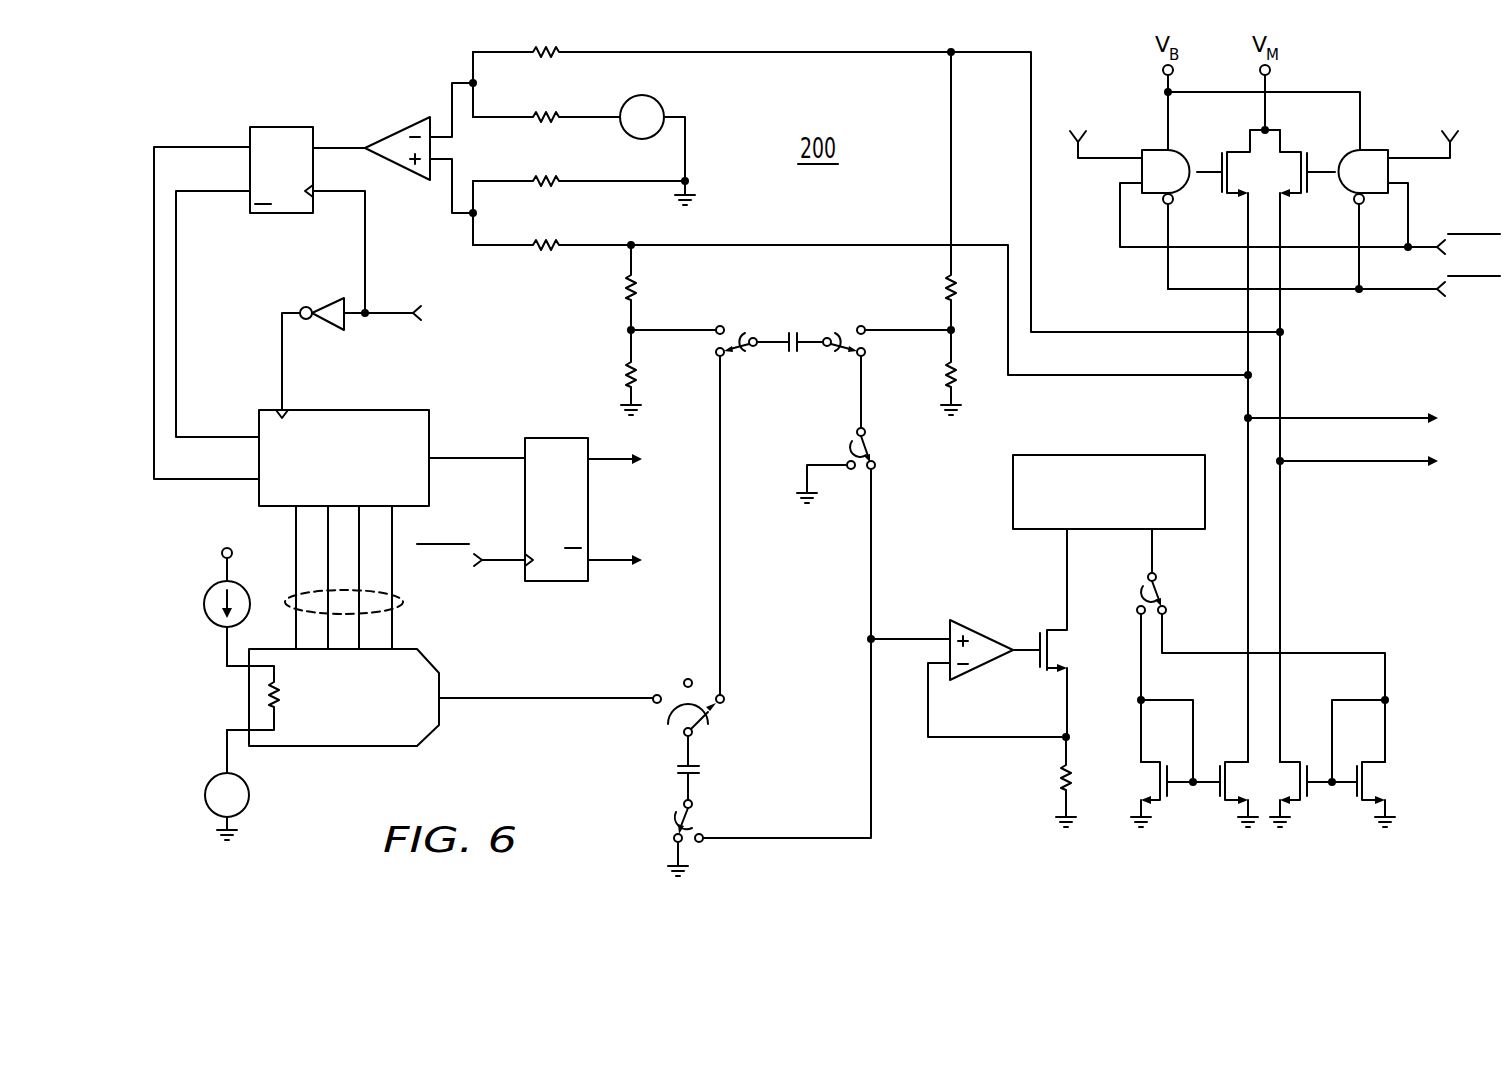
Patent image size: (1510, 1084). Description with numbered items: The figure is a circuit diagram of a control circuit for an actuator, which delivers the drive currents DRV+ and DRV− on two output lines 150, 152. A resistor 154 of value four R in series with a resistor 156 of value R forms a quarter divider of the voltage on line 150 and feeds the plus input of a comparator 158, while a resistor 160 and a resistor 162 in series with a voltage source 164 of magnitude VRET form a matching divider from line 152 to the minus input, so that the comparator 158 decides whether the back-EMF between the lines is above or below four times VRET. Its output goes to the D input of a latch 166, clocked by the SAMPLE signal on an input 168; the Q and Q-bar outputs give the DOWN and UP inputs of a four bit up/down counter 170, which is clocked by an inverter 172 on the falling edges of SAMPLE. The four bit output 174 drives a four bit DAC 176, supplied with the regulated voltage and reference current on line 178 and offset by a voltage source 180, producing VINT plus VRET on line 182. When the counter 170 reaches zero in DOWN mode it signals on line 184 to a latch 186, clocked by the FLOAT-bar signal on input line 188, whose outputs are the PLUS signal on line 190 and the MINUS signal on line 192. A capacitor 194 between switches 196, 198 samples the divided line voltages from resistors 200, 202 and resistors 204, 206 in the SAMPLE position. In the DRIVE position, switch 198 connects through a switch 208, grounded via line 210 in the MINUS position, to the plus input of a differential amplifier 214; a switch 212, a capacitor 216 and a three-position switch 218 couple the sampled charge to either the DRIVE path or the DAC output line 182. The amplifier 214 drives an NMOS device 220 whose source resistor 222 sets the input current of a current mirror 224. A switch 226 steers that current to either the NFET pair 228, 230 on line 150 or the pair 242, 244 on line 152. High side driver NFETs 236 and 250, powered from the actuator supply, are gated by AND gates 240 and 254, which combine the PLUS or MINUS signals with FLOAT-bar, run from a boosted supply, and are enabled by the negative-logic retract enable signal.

The output line 150 is at (1396, 398).
The output line 152 is at (1380, 466).
The resistor 154 is at (538, 262).
The resistor 156 is at (538, 198).
The comparator 158 is at (398, 122).
The resistor 160 is at (544, 64).
The resistor 162 is at (538, 134).
The voltage source 164 is at (625, 130).
The latch 166 is at (278, 127).
The input 168 is at (392, 310).
The four bit up/down counter 170 is at (331, 410).
The inverter 172 is at (326, 296).
The four bit output 174 is at (403, 603).
The four bit digital-to-analog converter 176 is at (342, 748).
The line 178 is at (218, 647).
The voltage source 180 is at (199, 798).
The line 182 is at (560, 704).
The line 184 is at (474, 466).
The latch 186 is at (550, 438).
The input line 188 is at (500, 566).
The line 190 is at (600, 566).
The line 192 is at (600, 466).
The capacitor 194 is at (786, 332).
The switch 196 is at (710, 342).
The switch 198 is at (863, 342).
The resistor 200 is at (636, 280).
The resistor 202 is at (640, 378).
The resistor 204 is at (942, 282).
The resistor 206 is at (938, 378).
The switch 208 is at (848, 430).
The line 210 is at (802, 480).
The switch 212 is at (690, 846).
The differential amplifier 214 is at (985, 672).
The capacitor 216 is at (703, 772).
The switch 218 is at (662, 712).
The NMOS device 220 is at (1046, 632).
The resistor 222 is at (1059, 778).
The current mirror 224 is at (1108, 455).
The switch 226 is at (1135, 586).
The NFET device 228 is at (1164, 752).
The NFET device 230 is at (1226, 764).
The large current NFET 236 is at (1230, 146).
The AND gate 240 is at (1146, 148).
The NFET device 242 is at (1364, 764).
The NFET device 244 is at (1304, 752).
The high current NFET 250 is at (1300, 146).
The AND gate 254 is at (1392, 148).